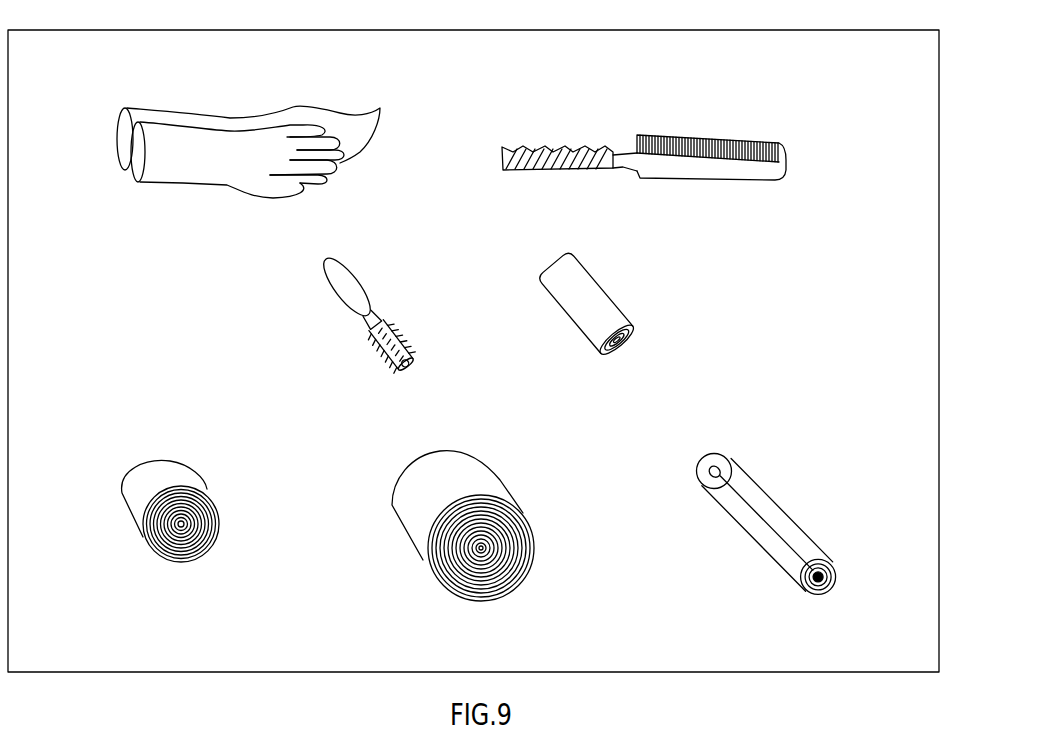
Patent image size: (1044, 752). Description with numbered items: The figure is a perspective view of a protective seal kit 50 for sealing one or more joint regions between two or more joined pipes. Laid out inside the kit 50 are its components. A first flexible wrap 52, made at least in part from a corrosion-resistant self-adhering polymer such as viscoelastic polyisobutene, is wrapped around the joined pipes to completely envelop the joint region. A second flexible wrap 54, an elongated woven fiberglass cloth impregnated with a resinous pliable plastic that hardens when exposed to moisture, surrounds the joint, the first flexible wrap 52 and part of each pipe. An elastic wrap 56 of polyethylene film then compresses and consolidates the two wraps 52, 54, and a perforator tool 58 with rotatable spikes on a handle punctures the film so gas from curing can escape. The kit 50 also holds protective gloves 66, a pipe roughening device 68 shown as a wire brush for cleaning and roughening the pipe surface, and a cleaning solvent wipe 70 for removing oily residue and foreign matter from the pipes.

The protective seal kit 50 is at (940, 346).
The first flexible wrap 52 is at (140, 480).
The second flexible wrap 54 is at (430, 471).
The elastic wrap 56 is at (762, 505).
The perforator tool 58 is at (367, 313).
The protective gloves 66 is at (383, 103).
The pipe roughening device 68 is at (620, 154).
The cleaning solvent wipe 70 is at (633, 316).